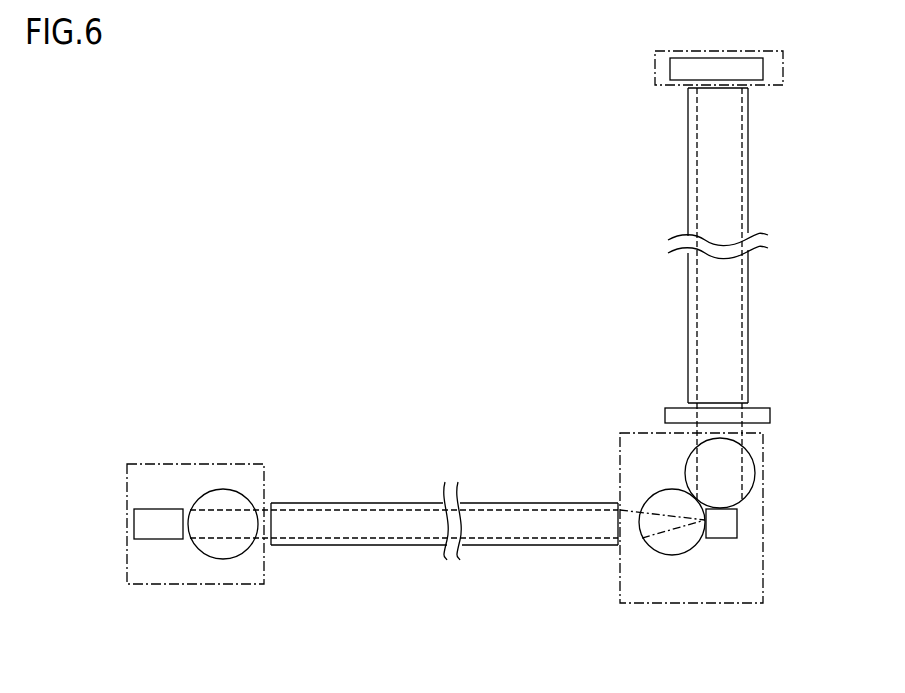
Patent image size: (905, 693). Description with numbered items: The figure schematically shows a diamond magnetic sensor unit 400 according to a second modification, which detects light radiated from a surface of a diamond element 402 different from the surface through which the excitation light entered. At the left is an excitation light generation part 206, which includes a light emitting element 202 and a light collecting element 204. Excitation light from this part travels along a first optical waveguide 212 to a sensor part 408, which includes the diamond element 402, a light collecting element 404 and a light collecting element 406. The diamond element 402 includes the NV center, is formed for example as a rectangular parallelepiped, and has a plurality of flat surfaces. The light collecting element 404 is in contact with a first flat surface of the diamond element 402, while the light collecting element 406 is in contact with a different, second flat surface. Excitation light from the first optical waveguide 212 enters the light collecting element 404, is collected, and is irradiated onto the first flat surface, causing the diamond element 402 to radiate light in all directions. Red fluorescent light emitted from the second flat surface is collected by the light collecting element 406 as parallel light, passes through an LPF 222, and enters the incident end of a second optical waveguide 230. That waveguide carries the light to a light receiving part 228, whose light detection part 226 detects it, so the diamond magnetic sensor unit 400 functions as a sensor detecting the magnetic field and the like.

The diamond magnetic sensor unit 400 is at (358, 175).
The light detection part 226 is at (783, 70).
The light receiving part 228 is at (655, 63).
The second optical waveguide 230 is at (688, 328).
The LPF 222 is at (665, 416).
The sensor part 408 is at (763, 500).
The light collecting element 406 is at (685, 473).
The light collecting element 404 is at (672, 555).
The diamond element 402 is at (720, 538).
The first optical waveguide 212 is at (378, 545).
The excitation light generation part 206 is at (192, 584).
The light emitting element 202 is at (160, 509).
The light collecting element 204 is at (223, 489).